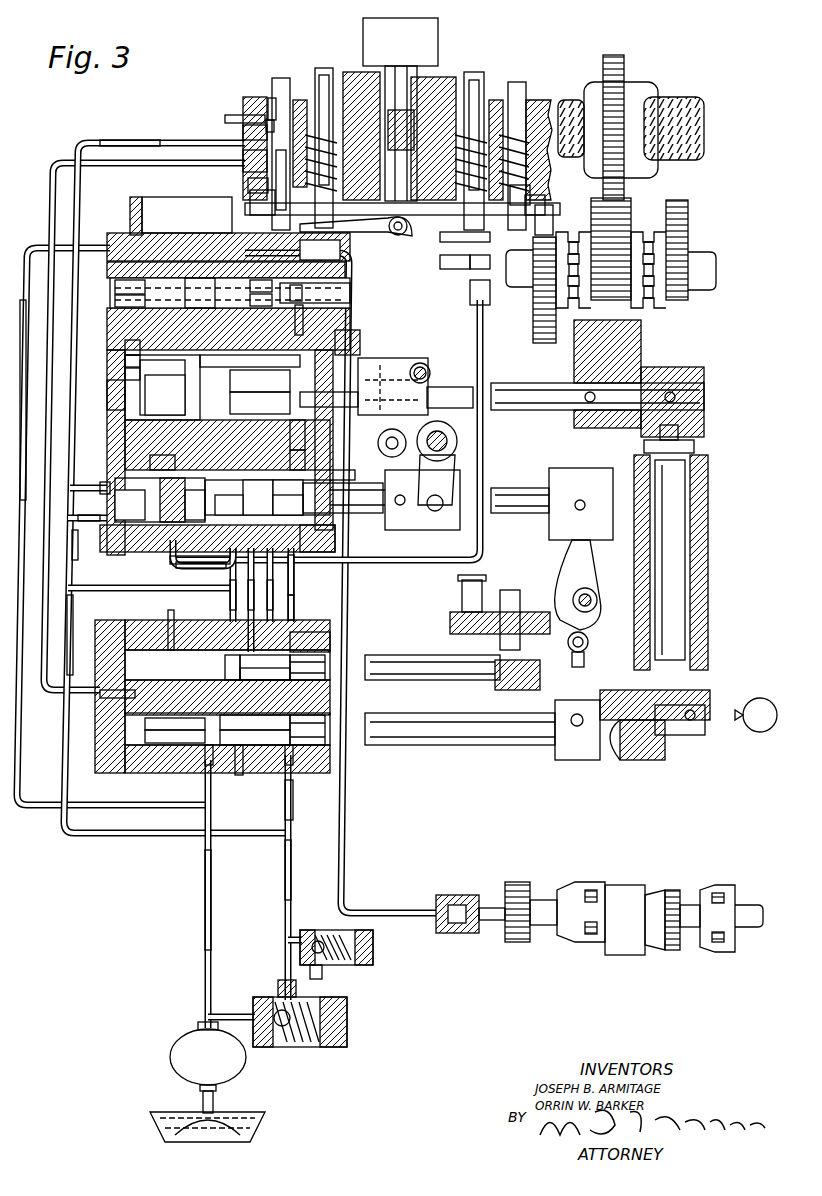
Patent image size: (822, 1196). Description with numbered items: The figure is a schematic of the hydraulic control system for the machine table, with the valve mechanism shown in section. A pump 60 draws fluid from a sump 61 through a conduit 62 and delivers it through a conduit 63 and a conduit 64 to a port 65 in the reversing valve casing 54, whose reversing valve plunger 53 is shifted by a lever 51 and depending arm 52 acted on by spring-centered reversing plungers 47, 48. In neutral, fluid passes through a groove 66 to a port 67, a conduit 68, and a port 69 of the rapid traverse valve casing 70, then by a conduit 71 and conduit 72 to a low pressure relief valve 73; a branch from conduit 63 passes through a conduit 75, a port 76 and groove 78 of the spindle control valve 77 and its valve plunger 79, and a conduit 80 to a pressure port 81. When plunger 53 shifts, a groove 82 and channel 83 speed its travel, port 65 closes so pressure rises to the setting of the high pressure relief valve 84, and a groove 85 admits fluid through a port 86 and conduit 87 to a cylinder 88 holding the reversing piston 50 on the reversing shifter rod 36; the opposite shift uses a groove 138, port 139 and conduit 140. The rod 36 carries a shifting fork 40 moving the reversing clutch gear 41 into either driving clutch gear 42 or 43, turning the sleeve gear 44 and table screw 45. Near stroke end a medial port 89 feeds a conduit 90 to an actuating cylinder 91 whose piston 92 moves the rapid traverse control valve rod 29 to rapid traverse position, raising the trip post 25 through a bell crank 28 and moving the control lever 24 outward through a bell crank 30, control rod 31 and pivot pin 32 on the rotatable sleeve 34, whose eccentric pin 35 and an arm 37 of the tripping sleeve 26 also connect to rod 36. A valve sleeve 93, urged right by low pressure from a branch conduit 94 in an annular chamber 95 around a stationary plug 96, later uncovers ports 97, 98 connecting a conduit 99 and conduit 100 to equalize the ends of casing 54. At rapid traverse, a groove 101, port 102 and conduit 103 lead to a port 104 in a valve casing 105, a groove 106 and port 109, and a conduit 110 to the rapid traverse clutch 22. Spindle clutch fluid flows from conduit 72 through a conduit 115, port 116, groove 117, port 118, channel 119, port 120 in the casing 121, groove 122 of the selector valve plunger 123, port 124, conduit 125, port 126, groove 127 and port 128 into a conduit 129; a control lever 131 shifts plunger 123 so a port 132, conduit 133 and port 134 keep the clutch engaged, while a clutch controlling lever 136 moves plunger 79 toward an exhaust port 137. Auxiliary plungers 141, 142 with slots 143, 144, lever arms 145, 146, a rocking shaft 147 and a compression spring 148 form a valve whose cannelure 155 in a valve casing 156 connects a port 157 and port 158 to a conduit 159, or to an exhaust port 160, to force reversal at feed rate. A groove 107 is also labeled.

The rapid traverse clutch 22 is at (630, 885).
The control lever 24 is at (756, 733).
The trip post 25 is at (436, 40).
The tripping sleeve 26 is at (430, 75).
The bell crank 28 is at (458, 450).
The rapid traverse control valve rod 29 is at (535, 518).
The bell crank 30 is at (568, 572).
The control rod 31 is at (680, 690).
The pivot pin 32 is at (700, 735).
The rotatable sleeve 34 is at (695, 525).
The eccentric pin 35 is at (696, 446).
The reversing shifter rod 36 is at (700, 408).
The arm 37 is at (441, 385).
The shifting fork 40 is at (643, 365).
The reversing clutch gear 41 is at (632, 205).
The driving clutch gear 42 is at (545, 340).
The driving clutch gear 43 is at (688, 230).
The sleeve gear 44 is at (625, 75).
The table screw 45 is at (690, 100).
The reversing plunger 47 is at (330, 70).
The reversing plunger 48 is at (476, 74).
The reversing piston 50 is at (127, 376).
The lever 51 is at (412, 230).
The depending arm 52 is at (454, 258).
The reversing valve plunger 53 is at (470, 280).
The reversing valve casing 54 is at (482, 298).
The pump 60 is at (182, 1063).
The sump 61 is at (175, 1130).
The conduit 62 is at (202, 1105).
The conduit 63 is at (204, 938).
The conduit 64 is at (30, 250).
The port 65 is at (331, 248).
The groove 66 is at (310, 288).
The port 67 is at (300, 325).
The conduit 68 is at (292, 440).
The port 69 is at (292, 462).
The rapid traverse valve casing 70 is at (325, 528).
The conduit 71 is at (294, 580).
The conduit 72 is at (68, 620).
The low pressure relief valve 73 is at (340, 925).
The conduit 75 is at (208, 768).
The port 76 is at (175, 735).
The spindle control valve 77 is at (160, 765).
The groove 78 is at (227, 728).
The valve plunger 79 is at (308, 720).
The conduit 80 is at (140, 695).
The pressure port 81 is at (210, 265).
The groove 82 is at (230, 282).
The channel 83 is at (320, 289).
The high pressure relief valve 84 is at (305, 1048).
The groove 85 is at (271, 283).
The port 86 is at (271, 300).
The conduit 87 is at (125, 345).
The cylinder 88 is at (127, 362).
The medial port 89 is at (165, 395).
The conduit 90 is at (200, 450).
The actuating cylinder 91 is at (160, 497).
The piston 92 is at (267, 493).
The valve sleeve 93 is at (130, 505).
The branch conduit 94 is at (95, 528).
The annular chamber 95 is at (115, 548).
The stationary plug 96 is at (105, 488).
The port 97 is at (179, 497).
The port 98 is at (192, 505).
The conduit 99 is at (110, 402).
The conduit 100 is at (172, 558).
The groove 101 is at (288, 494).
The port 102 is at (344, 498).
The conduit 103 is at (305, 460).
The port 104 is at (358, 400).
The valve casing 105 is at (358, 386).
The groove 106 is at (230, 380).
The valve 107 is at (230, 398).
The port 109 is at (275, 355).
The conduit 110 is at (360, 343).
The conduit 115 is at (290, 800).
The port 116 is at (292, 750).
The groove 117 is at (255, 736).
The port 118 is at (255, 722).
The channel 119 is at (307, 667).
The port 120 is at (265, 672).
The casing 121 is at (315, 630).
The groove 122 is at (225, 672).
The selector valve plunger 123 is at (310, 655).
The port 124 is at (265, 666).
The conduit 125 is at (273, 605).
The port 126 is at (288, 503).
The groove 127 is at (225, 503).
The port 128 is at (258, 494).
The conduit 129 is at (251, 601).
The control lever 131 is at (460, 598).
The port 132 is at (235, 648).
The conduit 133 is at (230, 606).
The port 134 is at (225, 555).
The clutch controlling lever 136 is at (584, 640).
The exhaust port 137 is at (240, 770).
The groove 138 is at (115, 286).
The port 139 is at (115, 300).
The conduit 140 is at (162, 383).
The auxiliary plunger 141 is at (290, 85).
The auxiliary plunger 142 is at (517, 90).
The slot 143 is at (265, 185).
The slot 144 is at (545, 200).
The lever arm 145 is at (265, 200).
The lever arm 146 is at (553, 215).
The rocking shaft 147 is at (480, 240).
The compression spring 148 is at (530, 188).
The cannelure 155 is at (275, 100).
The valve casing 156 is at (270, 112).
The port 157 is at (262, 162).
The port 158 is at (262, 132).
The conduit 159 is at (92, 136).
The exhaust port 160 is at (262, 118).